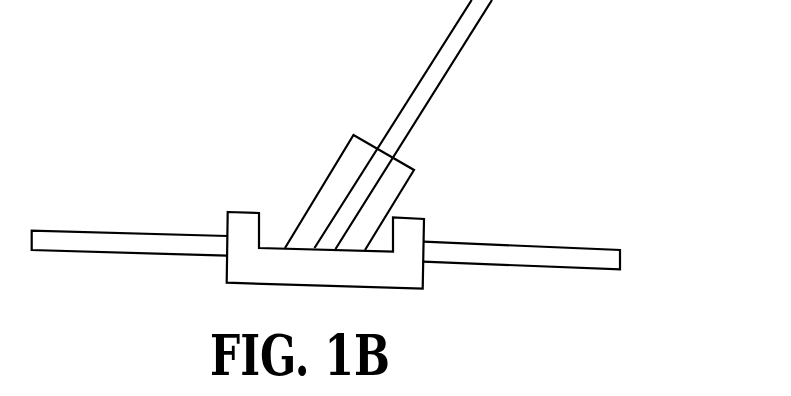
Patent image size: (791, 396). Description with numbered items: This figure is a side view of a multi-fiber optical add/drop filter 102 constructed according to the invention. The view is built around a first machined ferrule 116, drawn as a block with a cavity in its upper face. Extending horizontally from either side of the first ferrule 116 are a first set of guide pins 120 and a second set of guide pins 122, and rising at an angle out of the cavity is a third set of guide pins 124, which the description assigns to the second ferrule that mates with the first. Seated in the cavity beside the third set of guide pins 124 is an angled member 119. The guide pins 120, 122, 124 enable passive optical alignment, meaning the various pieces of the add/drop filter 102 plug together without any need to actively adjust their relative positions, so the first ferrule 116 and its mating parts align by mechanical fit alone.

The multi-fiber optical add/drop filter 102 is at (172, 127).
The first machined ferrule 116 is at (424, 278).
The angled mounting member 119 is at (403, 167).
The first set of guide pins 120 is at (550, 247).
The second set of guide pins 122 is at (98, 232).
The third set of guide pins 124 is at (462, 50).